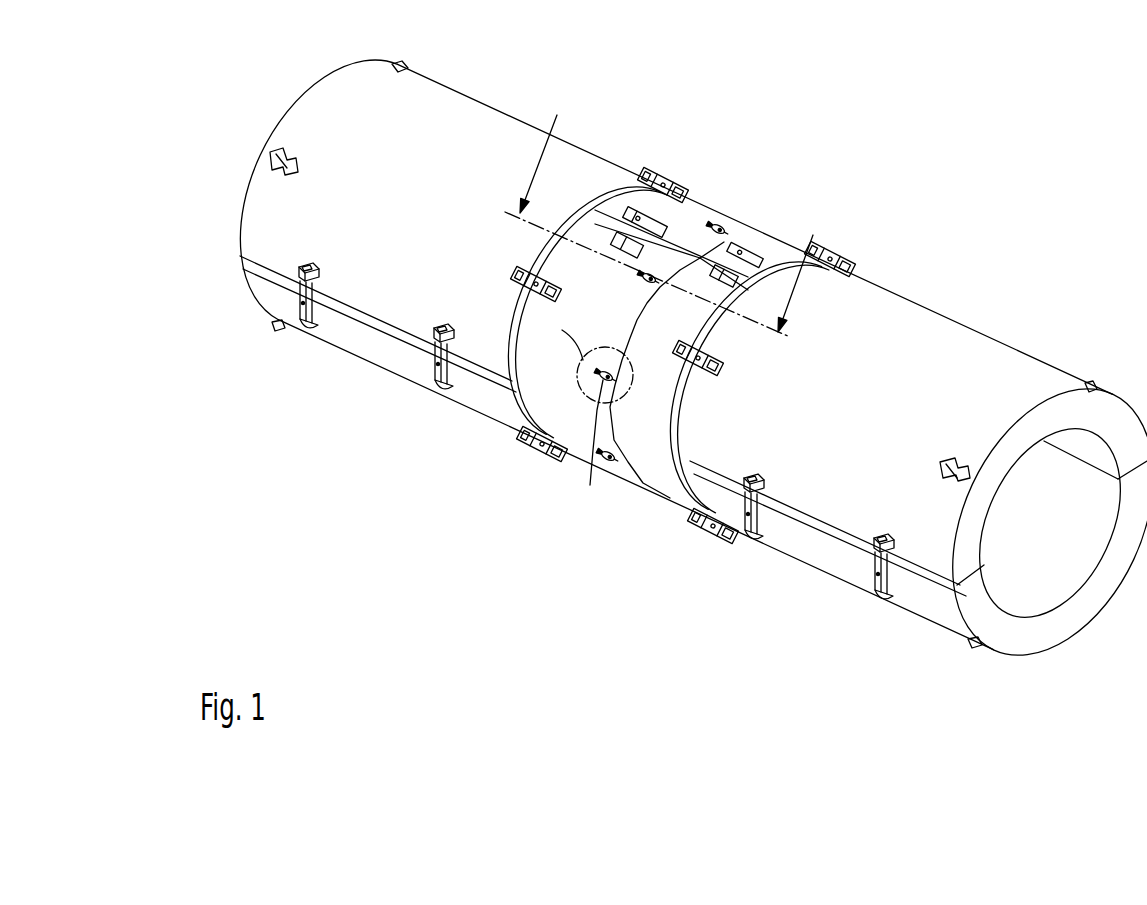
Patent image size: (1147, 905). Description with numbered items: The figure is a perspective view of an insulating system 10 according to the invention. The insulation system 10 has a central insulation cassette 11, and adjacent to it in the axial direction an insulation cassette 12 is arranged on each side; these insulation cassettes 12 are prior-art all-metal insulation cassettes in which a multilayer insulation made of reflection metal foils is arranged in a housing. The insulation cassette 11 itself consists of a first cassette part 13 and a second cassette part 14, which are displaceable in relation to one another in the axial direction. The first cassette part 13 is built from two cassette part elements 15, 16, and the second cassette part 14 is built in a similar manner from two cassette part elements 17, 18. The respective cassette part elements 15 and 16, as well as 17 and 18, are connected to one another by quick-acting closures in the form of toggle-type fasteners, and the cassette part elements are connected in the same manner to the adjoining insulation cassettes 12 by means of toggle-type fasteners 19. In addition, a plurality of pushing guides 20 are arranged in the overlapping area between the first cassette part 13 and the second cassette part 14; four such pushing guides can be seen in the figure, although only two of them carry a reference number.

The insulating system 10 is at (1018, 95).
The insulation cassette 11 is at (755, 147).
The insulation cassette 12 is at (267, 380).
The first cassette part 13 is at (706, 153).
The second cassette part 14 is at (789, 191).
The cassette part element 15 is at (695, 222).
The cassette part element 16 is at (577, 438).
The cassette part element 17 is at (775, 253).
The cassette part element 18 is at (655, 468).
The toggle-type fastener 19 is at (645, 217).
The pushing guide 20 is at (607, 458).